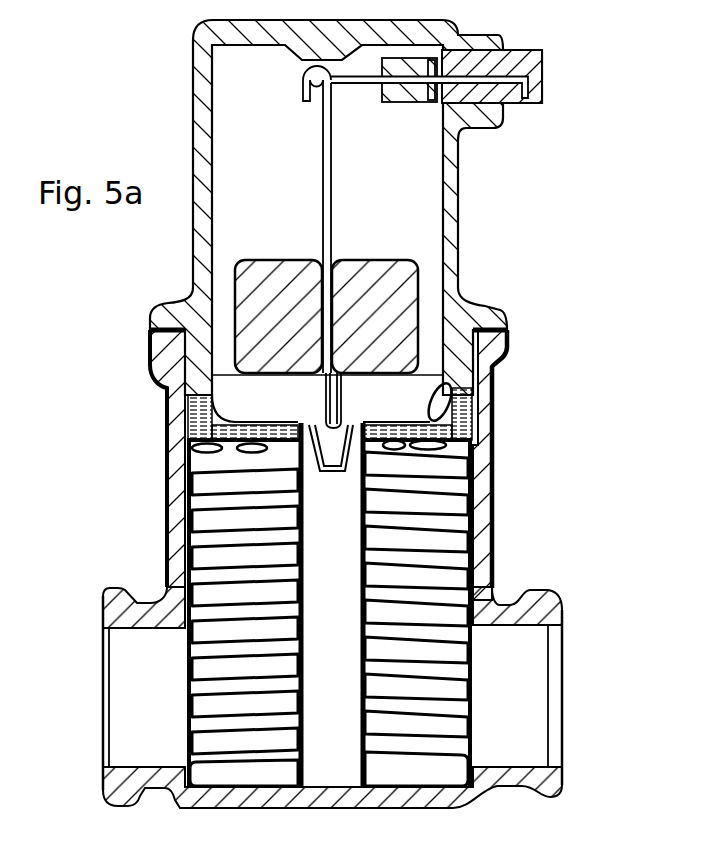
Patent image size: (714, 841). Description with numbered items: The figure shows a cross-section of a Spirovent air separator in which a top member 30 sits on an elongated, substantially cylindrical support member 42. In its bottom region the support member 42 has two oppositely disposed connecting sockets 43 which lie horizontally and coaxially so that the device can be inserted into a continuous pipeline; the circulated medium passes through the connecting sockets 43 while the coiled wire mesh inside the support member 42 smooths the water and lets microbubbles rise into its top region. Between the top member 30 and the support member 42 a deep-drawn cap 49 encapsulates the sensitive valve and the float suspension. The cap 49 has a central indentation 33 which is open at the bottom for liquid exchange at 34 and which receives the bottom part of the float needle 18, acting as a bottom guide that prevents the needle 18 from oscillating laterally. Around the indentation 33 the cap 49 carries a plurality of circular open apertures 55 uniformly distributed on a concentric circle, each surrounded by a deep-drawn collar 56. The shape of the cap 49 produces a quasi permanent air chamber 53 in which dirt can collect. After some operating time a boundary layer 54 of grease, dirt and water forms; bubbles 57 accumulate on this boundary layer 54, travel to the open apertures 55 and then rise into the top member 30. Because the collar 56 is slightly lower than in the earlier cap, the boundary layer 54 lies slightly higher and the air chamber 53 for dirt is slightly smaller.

The top member 30 is at (455, 183).
The float needle 18 is at (333, 240).
The cap 49 is at (449, 394).
The air chamber 53 is at (470, 400).
The boundary layer 54 is at (478, 452).
The circular open apertures 55 is at (383, 449).
The liquid exchange opening 34 is at (345, 492).
The collar 56 is at (186, 440).
The bubbles 57 is at (250, 455).
The support member 42 is at (174, 580).
The indentation 33 is at (306, 483).
The connecting sockets 43 is at (112, 787).